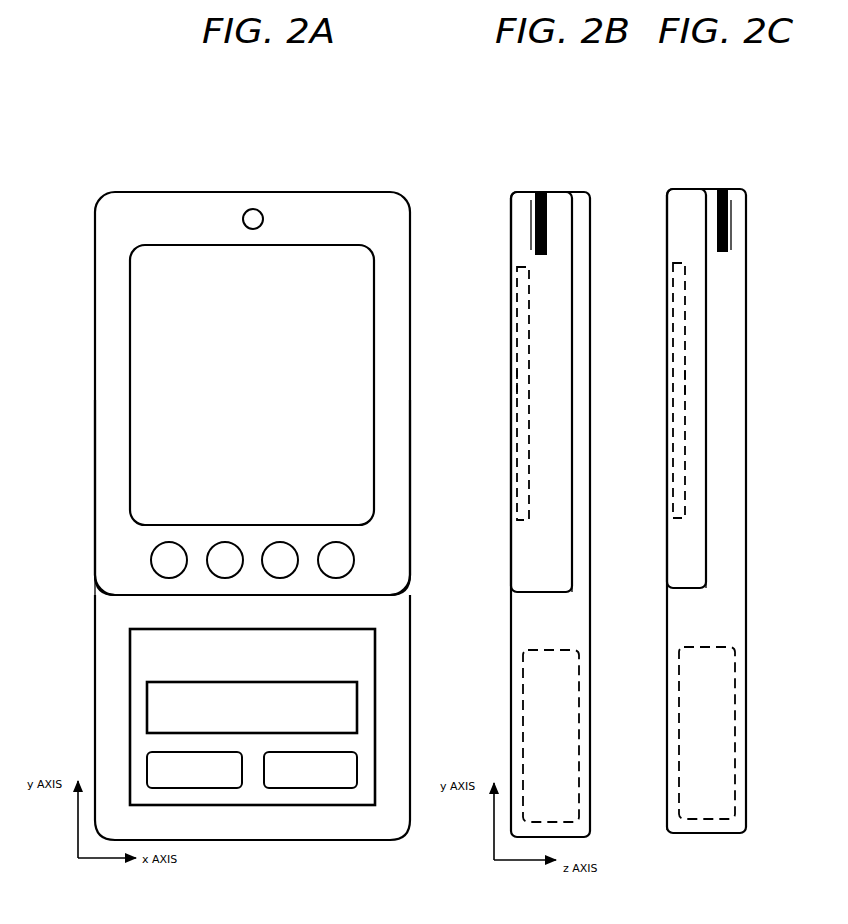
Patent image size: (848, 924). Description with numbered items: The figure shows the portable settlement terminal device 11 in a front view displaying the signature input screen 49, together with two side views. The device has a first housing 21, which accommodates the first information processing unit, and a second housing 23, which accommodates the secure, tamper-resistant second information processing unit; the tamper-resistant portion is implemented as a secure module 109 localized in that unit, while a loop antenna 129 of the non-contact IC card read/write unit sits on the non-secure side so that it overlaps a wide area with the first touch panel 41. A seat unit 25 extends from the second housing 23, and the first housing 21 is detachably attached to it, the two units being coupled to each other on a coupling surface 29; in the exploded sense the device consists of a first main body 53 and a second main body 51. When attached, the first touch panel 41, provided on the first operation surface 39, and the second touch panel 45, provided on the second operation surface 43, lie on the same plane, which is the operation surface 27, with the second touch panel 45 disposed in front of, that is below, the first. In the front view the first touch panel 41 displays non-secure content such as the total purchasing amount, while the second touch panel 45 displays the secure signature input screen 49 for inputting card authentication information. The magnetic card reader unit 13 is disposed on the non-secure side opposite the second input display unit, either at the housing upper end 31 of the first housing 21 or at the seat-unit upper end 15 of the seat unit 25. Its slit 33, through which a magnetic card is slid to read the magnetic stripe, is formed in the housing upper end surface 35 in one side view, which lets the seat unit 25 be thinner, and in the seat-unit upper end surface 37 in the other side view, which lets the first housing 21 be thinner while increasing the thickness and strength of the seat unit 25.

In FIG. 2A, the settlement terminal device 11 is at (133, 180).
In FIG. 2B, the settlement terminal device 11 is at (531, 155).
In FIG. 2C, the settlement terminal device 11 is at (697, 150).
In FIG. 2B, the magnetic card reader unit 13 is at (530, 215).
In FIG. 2C, the magnetic card reader unit 13 is at (731, 230).
In FIG. 2C, the seat-unit upper end 15 is at (737, 265).
In FIG. 2A, the first housing 21 is at (95, 406).
In FIG. 2A, the second housing 23 is at (95, 673).
In FIG. 2C, the seat unit 25 is at (746, 460).
In FIG. 2A, the operation surface 27 is at (42, 542).
In FIG. 2B, the operation surface 27 is at (511, 552).
In FIG. 2C, the operation surface 27 is at (667, 547).
In FIG. 2B, the coupling surface 29 is at (548, 591).
In FIG. 2C, the coupling surface 29 is at (689, 588).
In FIG. 2B, the housing upper end 31 is at (524, 252).
In FIG. 2B, the slit 33 is at (541, 194).
In FIG. 2C, the slit 33 is at (724, 190).
In FIG. 2B, the housing upper end surface 35 is at (560, 200).
In FIG. 2C, the seat-unit upper end surface 37 is at (738, 200).
In FIG. 2A, the first operation surface 39 is at (107, 573).
In FIG. 2A, the first touch panel 41 is at (130, 333).
In FIG. 2A, the second operation surface 43 is at (107, 608).
In FIG. 2A, the second touch panel 45 is at (237, 814).
In FIG. 2A, the signature input screen 49 is at (280, 807).
In FIG. 2A, the second main body 51 is at (94, 741).
In FIG. 2B, the second main body 51 is at (510, 727).
In FIG. 2C, the second main body 51 is at (666, 740).
In FIG. 2A, the first main body 53 is at (94, 494).
In FIG. 2B, the first main body 53 is at (510, 466).
In FIG. 2C, the first main body 53 is at (666, 461).
In FIG. 2B, the secure module 109 is at (571, 767).
In FIG. 2C, the secure module 109 is at (727, 770).
In FIG. 2B, the loop antenna 129 is at (528, 383).
In FIG. 2C, the loop antenna 129 is at (685, 388).